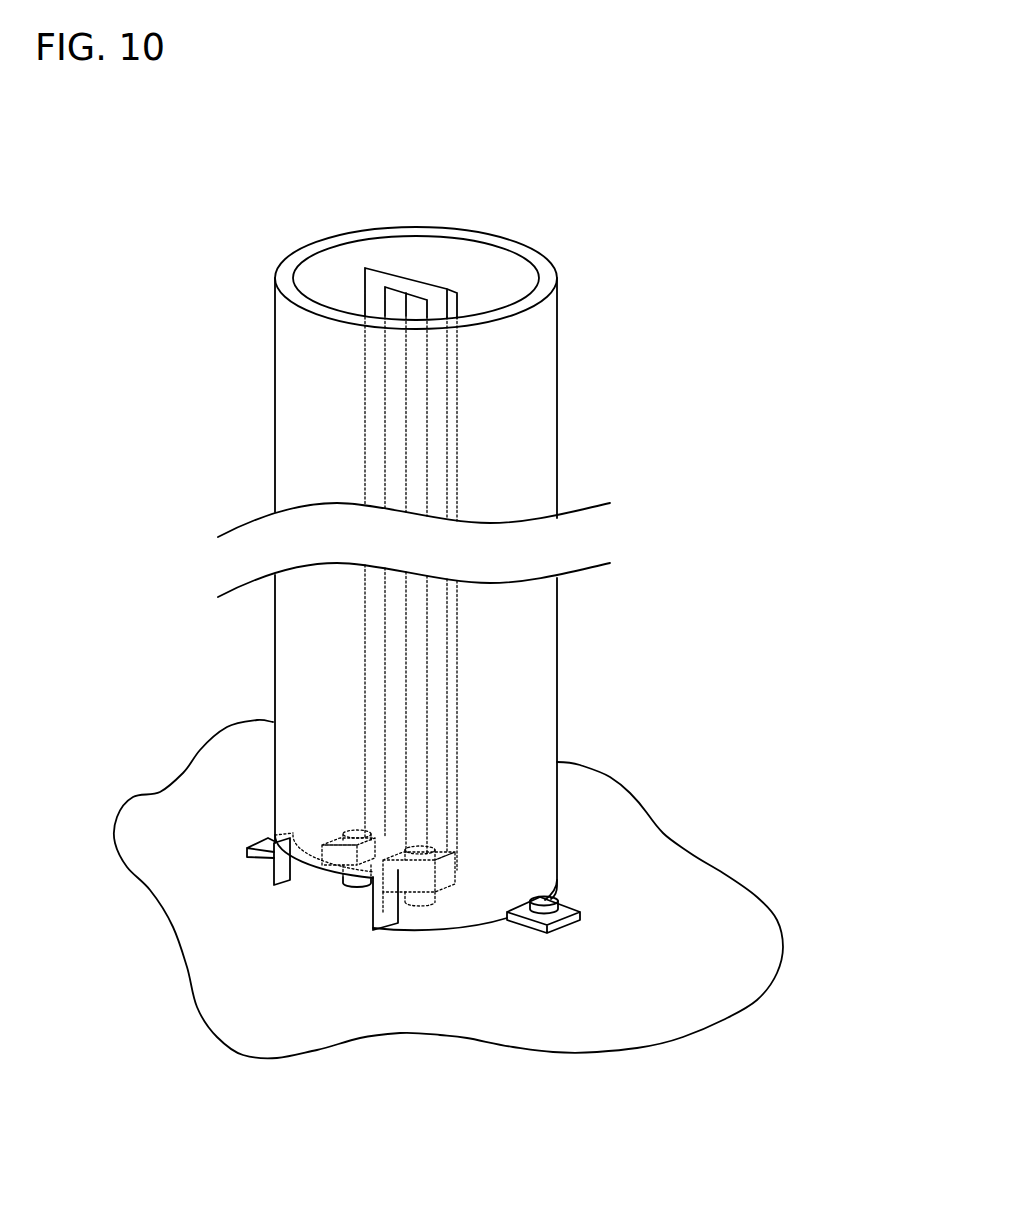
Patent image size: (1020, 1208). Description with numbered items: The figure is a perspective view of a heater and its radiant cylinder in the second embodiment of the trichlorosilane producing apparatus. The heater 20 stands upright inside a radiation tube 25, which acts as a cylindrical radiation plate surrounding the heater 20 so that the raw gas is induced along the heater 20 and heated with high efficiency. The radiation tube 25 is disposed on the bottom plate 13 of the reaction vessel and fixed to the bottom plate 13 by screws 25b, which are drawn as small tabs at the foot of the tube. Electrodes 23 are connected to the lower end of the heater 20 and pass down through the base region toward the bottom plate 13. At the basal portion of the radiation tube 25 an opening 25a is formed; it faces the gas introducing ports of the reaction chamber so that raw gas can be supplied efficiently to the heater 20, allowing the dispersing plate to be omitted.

The bottom plate 13 is at (594, 1003).
The heater 20 is at (432, 270).
The electrode 23 is at (354, 883).
The radiation tube 25 is at (538, 375).
The opening 25a is at (300, 893).
The screw 25b is at (273, 843).